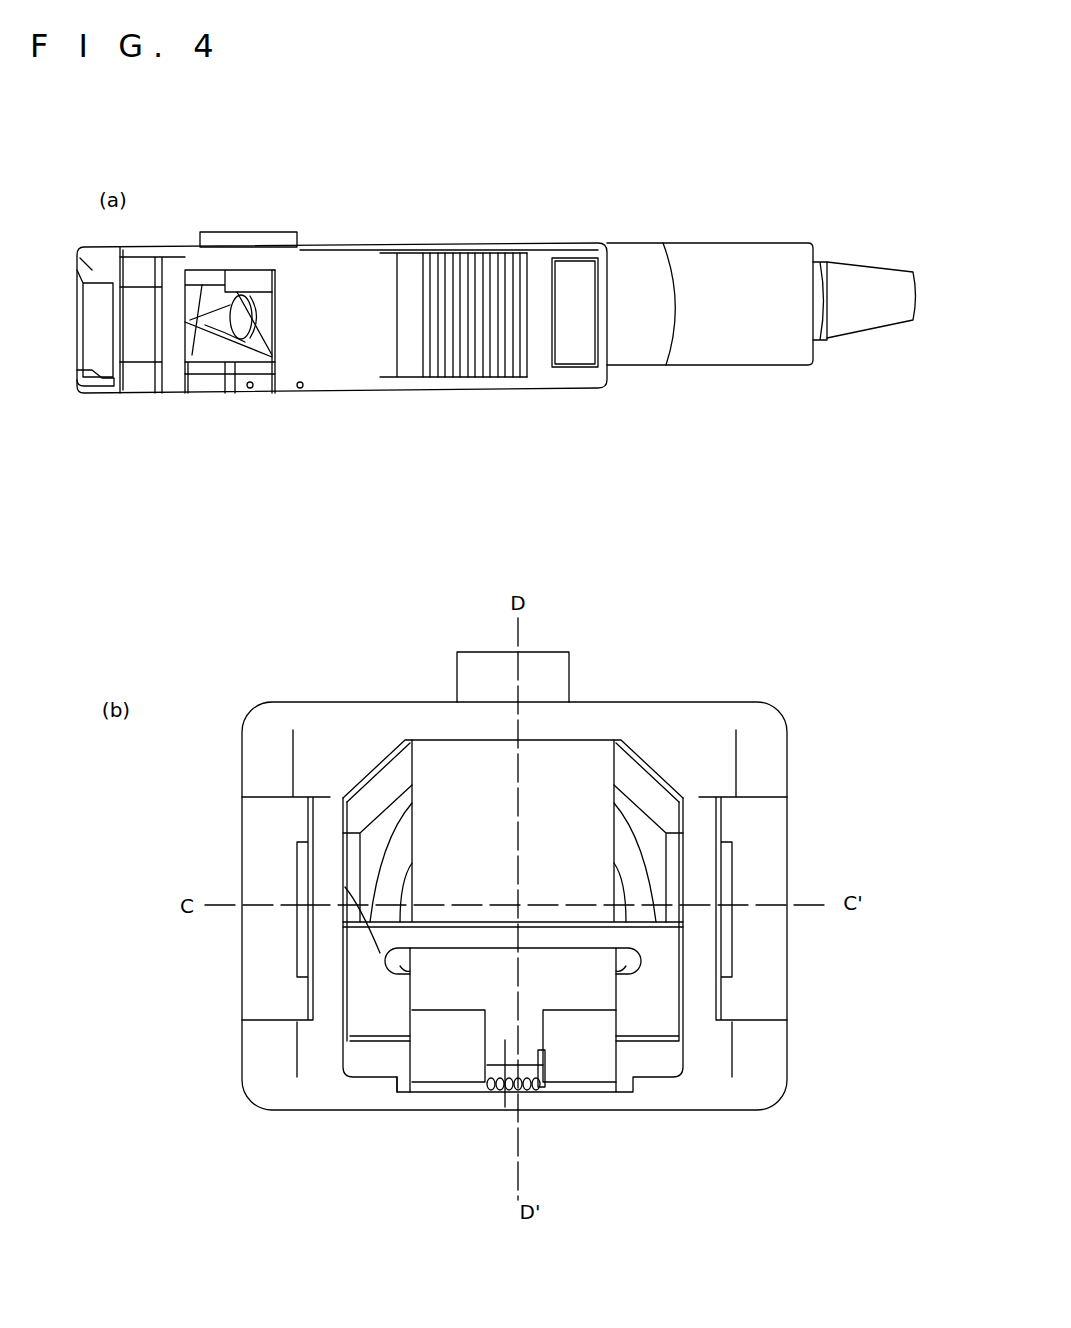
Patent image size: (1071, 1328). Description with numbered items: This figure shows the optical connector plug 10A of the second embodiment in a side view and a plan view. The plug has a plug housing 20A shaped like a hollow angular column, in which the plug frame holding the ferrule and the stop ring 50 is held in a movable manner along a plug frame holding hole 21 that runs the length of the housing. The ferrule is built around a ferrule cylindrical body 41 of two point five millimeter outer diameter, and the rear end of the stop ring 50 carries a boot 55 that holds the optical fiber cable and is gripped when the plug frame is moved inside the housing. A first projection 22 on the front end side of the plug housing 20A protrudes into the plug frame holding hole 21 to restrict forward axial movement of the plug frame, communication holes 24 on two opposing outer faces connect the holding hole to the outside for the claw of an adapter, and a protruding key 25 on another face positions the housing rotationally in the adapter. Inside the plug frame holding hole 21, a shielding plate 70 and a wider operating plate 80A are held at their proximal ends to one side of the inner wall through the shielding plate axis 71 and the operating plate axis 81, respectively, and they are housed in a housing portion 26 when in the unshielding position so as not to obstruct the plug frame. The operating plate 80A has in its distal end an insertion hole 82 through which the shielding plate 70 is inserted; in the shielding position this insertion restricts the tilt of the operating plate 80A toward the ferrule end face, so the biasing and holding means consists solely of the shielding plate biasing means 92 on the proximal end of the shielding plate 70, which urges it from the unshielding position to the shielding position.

The optical connector plug 10A is at (699, 173).
The plug housing 20A is at (323, 353).
The plug frame holding hole 21 is at (93, 305).
The first projection 22 is at (147, 303).
The communication holes 24 is at (173, 290).
The protruding key 25 is at (270, 230).
The housing portion 26 is at (80, 382).
The ferrule cylindrical body 41 is at (274, 392).
The stop ring 50 is at (632, 343).
The boot 55 is at (725, 343).
The shielding plate 70 is at (198, 362).
The shielding plate axis 71 is at (250, 389).
The operating plate 80A is at (237, 374).
The operating plate axis 81 is at (300, 389).
The insertion hole 82 is at (410, 975).
The shielding plate biasing means 92 is at (497, 1085).